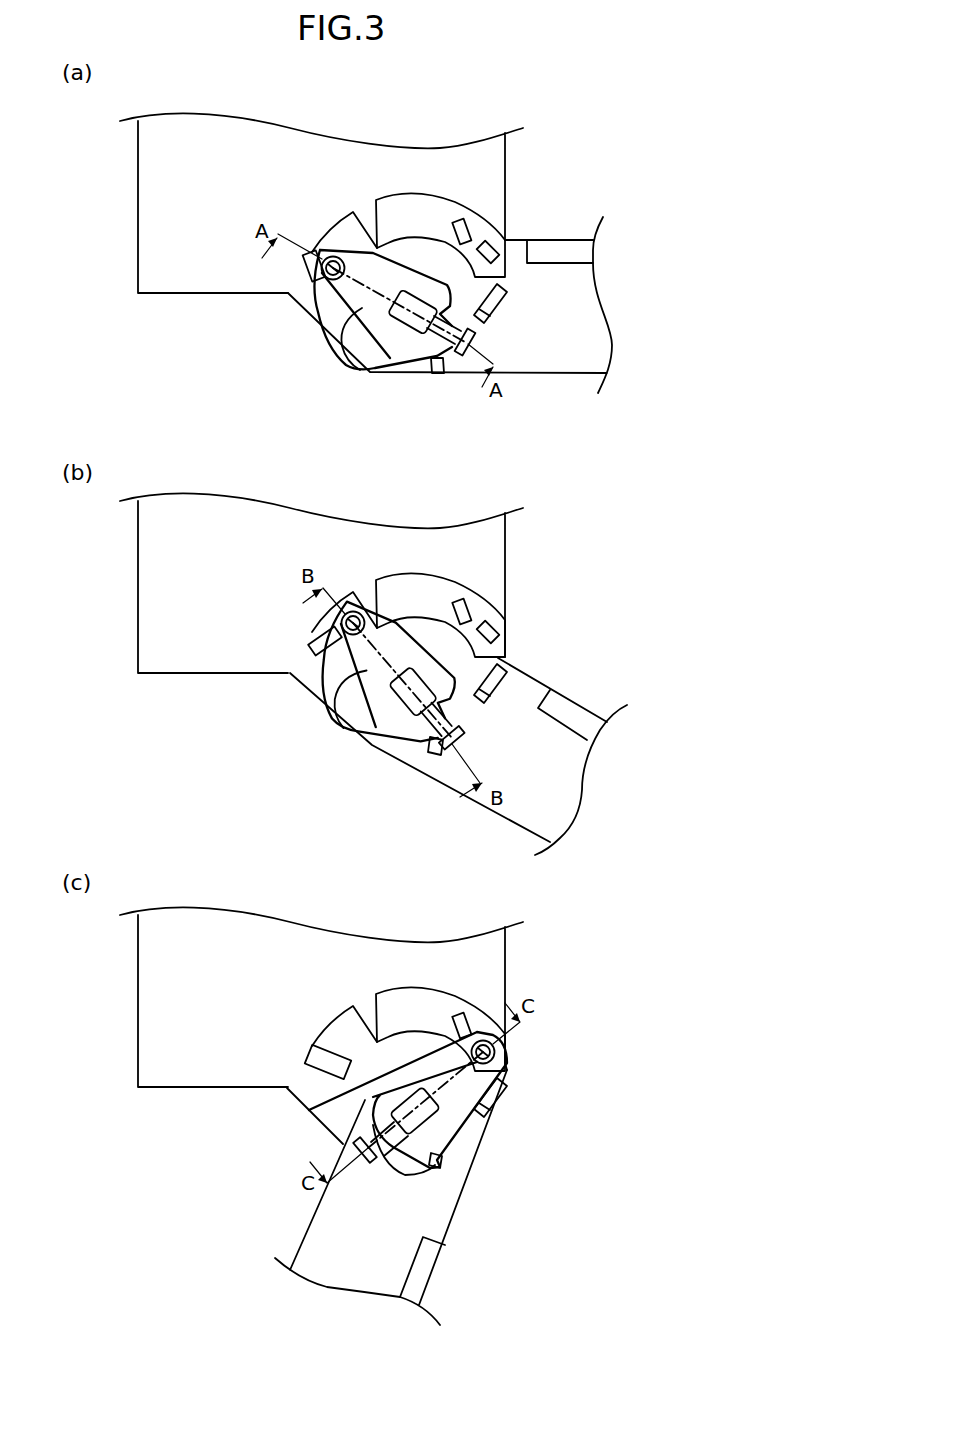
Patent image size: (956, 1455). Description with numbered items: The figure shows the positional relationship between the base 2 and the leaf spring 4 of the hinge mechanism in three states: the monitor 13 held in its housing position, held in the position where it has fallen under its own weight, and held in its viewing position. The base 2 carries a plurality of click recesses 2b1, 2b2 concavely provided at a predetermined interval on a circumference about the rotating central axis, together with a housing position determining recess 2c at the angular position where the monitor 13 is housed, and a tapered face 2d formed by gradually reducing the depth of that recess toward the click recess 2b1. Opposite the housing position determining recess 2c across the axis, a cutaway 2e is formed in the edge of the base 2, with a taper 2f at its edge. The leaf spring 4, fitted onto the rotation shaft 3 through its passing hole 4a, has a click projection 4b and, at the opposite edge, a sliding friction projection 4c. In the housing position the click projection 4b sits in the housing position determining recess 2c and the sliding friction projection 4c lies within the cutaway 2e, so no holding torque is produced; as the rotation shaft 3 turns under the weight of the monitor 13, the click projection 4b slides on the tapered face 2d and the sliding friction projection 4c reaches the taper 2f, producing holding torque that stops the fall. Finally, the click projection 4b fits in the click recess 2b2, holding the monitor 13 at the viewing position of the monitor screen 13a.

The base 2 is at (311, 600).
The click recess 2b1 is at (440, 588).
The click recess 2b2 is at (522, 401).
The housing position determining recess 2c is at (288, 682).
The tapered face 2d is at (344, 575).
The cutaway 2e is at (509, 700).
The taper 2f is at (439, 804).
The rotation shaft 3 is at (385, 712).
The leaf spring 4 is at (392, 709).
The passing hole 4a is at (356, 741).
The click projection 4b is at (448, 667).
The sliding friction projection 4c is at (449, 776).
The monitor 13 is at (451, 771).
The monitor screen 13a is at (515, 744).